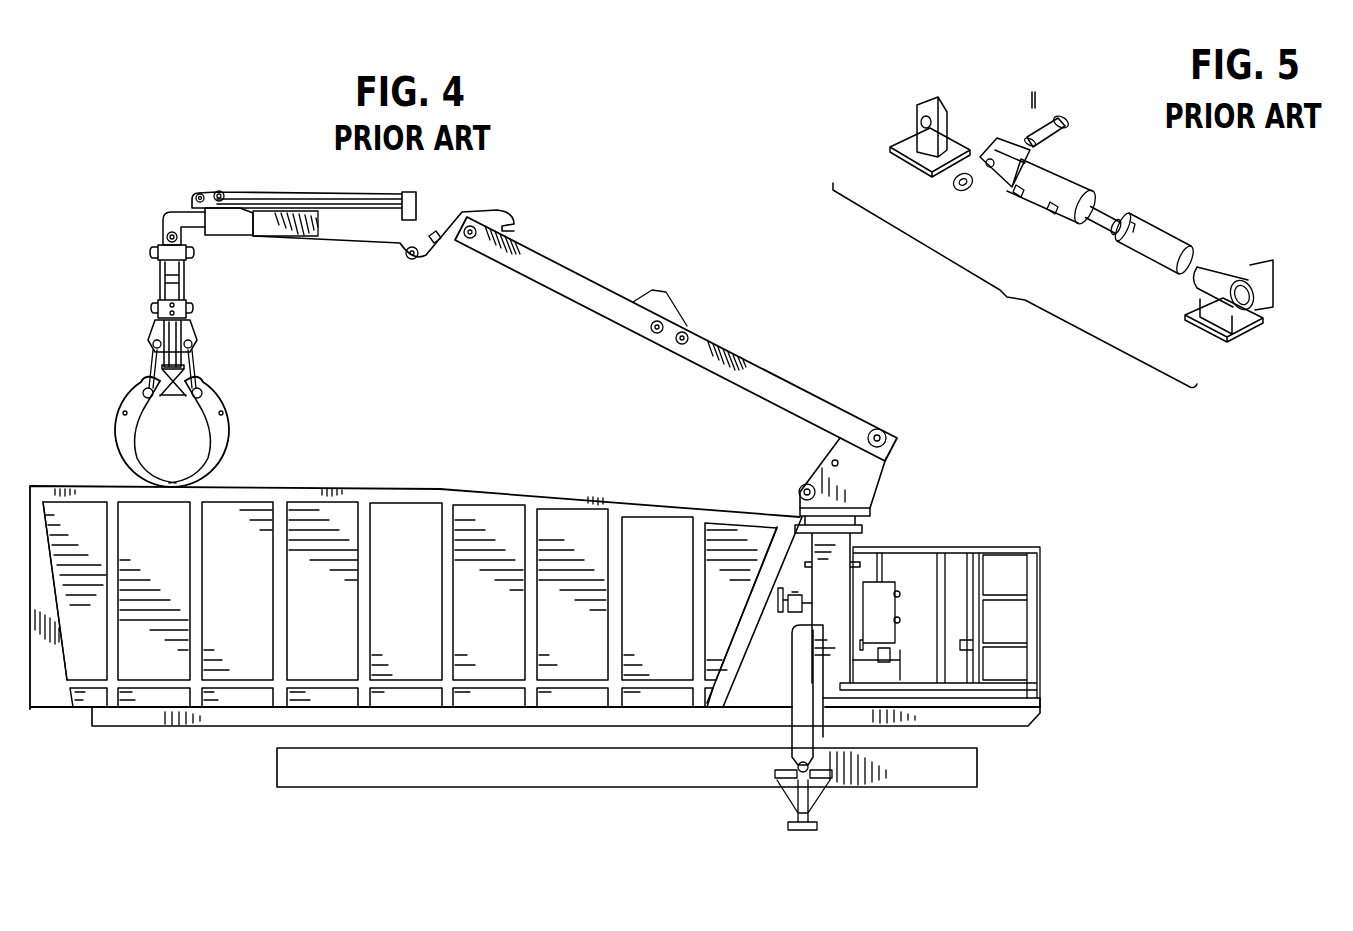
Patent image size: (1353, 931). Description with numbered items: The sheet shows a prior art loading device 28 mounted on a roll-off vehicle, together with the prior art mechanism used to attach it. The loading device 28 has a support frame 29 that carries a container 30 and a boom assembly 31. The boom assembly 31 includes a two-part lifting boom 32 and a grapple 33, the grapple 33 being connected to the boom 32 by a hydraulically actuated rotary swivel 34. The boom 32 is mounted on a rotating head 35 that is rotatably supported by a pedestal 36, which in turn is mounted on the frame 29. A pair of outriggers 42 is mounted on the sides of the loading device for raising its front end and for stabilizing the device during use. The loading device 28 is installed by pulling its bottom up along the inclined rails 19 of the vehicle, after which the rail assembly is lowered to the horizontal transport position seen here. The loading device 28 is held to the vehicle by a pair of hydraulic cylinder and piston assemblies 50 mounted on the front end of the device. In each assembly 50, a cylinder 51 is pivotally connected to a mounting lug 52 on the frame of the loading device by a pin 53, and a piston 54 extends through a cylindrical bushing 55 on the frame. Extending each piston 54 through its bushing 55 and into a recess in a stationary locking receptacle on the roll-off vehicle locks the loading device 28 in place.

In FIG. 4, the inclined rails 19 is at (597, 778).
In FIG. 4, the loading device 28 is at (75, 720).
In FIG. 4, the support frame 29 is at (245, 728).
In FIG. 4, the container 30 is at (404, 482).
In FIG. 4, the boom assembly 31 is at (733, 341).
In FIG. 4, the two-part lifting boom 32 is at (593, 287).
In FIG. 4, the grapple 33 is at (123, 400).
In FIG. 4, the rotary swivel 34 is at (155, 305).
In FIG. 4, the rotating head 35 is at (865, 482).
In FIG. 4, the pedestal 36 is at (850, 540).
In FIG. 4, the outriggers 42 is at (797, 737).
In FIG. 5, the hydraulic cylinder and piston assemblies 50 is at (1033, 224).
In FIG. 5, the cylinder 51 is at (1068, 170).
In FIG. 5, the mounting lug 52 is at (930, 97).
In FIG. 5, the pin 53 is at (1062, 115).
In FIG. 5, the piston 54 is at (1158, 223).
In FIG. 5, the cylindrical bushing 55 is at (1223, 257).